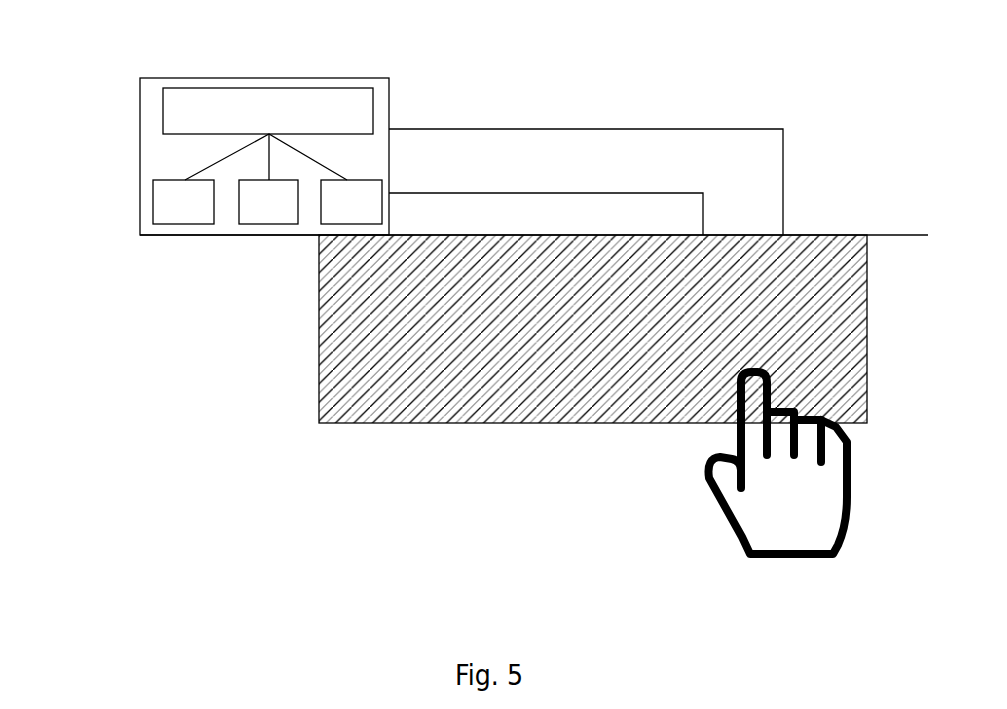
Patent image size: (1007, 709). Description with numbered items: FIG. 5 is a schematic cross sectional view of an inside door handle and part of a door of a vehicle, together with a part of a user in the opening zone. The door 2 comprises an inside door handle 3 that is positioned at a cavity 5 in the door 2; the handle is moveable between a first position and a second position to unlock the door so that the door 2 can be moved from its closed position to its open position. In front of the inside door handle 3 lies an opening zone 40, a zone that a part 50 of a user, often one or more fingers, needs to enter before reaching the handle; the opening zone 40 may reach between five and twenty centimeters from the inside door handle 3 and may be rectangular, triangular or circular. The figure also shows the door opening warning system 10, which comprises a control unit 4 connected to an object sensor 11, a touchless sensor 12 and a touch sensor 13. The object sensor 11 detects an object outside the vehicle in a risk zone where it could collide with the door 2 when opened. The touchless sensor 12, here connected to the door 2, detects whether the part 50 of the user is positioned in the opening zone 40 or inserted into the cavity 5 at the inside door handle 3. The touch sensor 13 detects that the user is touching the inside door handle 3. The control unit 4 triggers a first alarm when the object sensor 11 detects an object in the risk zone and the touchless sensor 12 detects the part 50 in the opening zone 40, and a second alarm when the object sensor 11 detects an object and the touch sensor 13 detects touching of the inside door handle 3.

The door 2 is at (534, 156).
The inside door handle 3 is at (546, 148).
The control unit 4 is at (268, 70).
The cavity 5 is at (586, 139).
The door opening warning system 10 is at (212, 156).
The object sensor 11 is at (157, 275).
The touchless sensor 12 is at (239, 275).
The touch sensor 13 is at (325, 280).
The opening zone 40 is at (593, 379).
The part of a user 50 is at (824, 456).